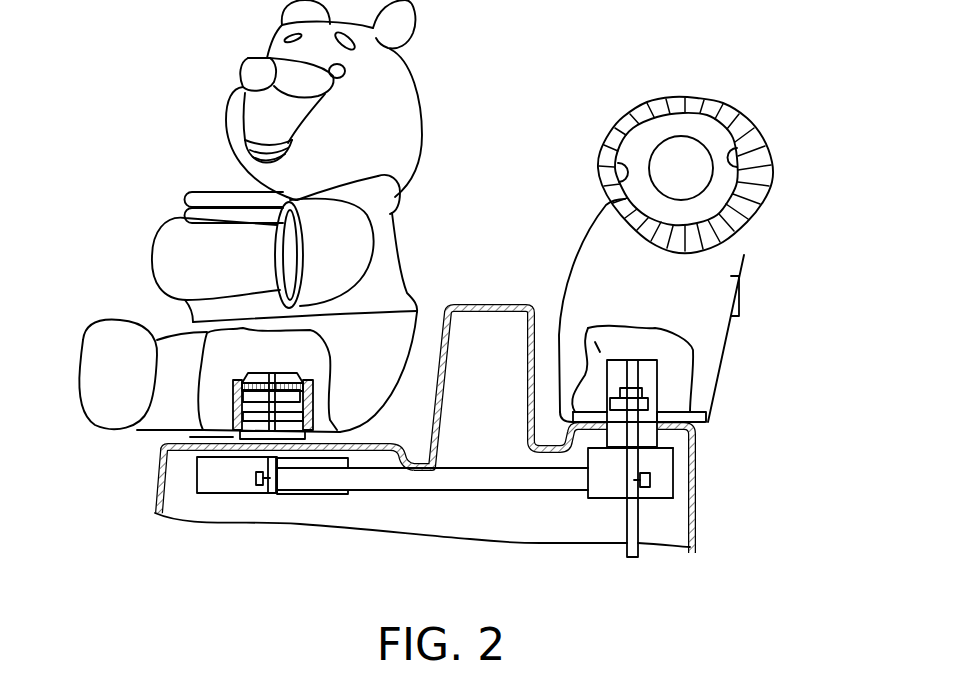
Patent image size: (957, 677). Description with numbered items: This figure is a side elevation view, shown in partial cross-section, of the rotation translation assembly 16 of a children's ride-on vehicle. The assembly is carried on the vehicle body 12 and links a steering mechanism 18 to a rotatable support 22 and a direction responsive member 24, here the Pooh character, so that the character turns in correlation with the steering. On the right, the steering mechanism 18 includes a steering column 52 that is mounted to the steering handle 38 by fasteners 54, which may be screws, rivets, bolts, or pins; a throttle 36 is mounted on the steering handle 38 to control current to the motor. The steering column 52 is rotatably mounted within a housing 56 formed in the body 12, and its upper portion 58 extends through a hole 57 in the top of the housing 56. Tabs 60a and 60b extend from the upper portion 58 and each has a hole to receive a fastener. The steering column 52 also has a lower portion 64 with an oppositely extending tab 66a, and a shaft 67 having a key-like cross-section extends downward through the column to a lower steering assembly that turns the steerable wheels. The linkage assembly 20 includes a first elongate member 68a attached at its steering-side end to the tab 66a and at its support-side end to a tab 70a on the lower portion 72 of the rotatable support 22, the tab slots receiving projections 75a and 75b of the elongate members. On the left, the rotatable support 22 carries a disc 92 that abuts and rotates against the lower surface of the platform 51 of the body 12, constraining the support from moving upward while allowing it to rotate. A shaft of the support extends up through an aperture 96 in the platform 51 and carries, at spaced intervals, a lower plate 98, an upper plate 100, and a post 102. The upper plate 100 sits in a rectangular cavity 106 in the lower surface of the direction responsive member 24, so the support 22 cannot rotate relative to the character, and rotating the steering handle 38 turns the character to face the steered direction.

The body 12 is at (486, 300).
The rotation translation assembly 16 is at (565, 576).
The steering mechanism 18 is at (568, 362).
The linkage assembly 20 is at (490, 466).
The rotatable support 22 is at (259, 512).
The direction responsive member 24 is at (222, 112).
The throttle 36 is at (743, 300).
The steering handle 38 is at (748, 128).
The platform 51 is at (190, 437).
The steering column 52 is at (673, 440).
The fasteners 54 is at (648, 405).
The housing 56 is at (650, 483).
The hole 57 is at (663, 428).
The upper portion 58 is at (643, 360).
The tab 60a is at (625, 372).
The tab 60b is at (561, 274).
The lower portion 64 is at (673, 470).
The tab 66a is at (637, 453).
The shaft 67 is at (650, 527).
The first elongate member 68a is at (507, 492).
The tab 70a is at (273, 457).
The lower portion 72 is at (197, 477).
The projection 75a is at (257, 478).
The projection 75b is at (640, 478).
The disc 92 is at (347, 453).
The aperture 96 is at (240, 448).
The lower plate 98 is at (255, 438).
The upper plate 100 is at (310, 410).
The post 102 is at (293, 380).
The cavity 106 is at (240, 382).